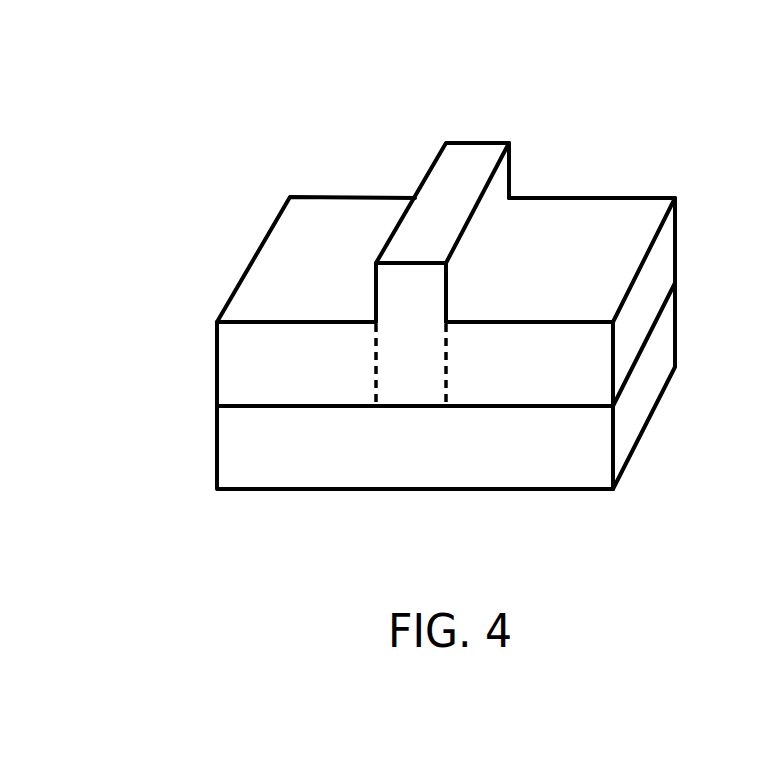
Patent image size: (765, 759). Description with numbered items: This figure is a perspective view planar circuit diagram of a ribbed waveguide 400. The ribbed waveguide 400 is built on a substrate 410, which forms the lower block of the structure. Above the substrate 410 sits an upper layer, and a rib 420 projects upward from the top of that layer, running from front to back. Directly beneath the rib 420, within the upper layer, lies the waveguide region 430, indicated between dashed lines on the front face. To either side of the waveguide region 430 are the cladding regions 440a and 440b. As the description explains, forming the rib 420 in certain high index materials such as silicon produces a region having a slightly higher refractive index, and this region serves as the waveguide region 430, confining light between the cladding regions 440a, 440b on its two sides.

The ribbed waveguide 400 is at (90, 93).
The substrate 410 is at (427, 450).
The rib 420 is at (507, 173).
The waveguide region 430 is at (433, 368).
The cladding region 440a is at (348, 368).
The cladding region 440b is at (528, 366).